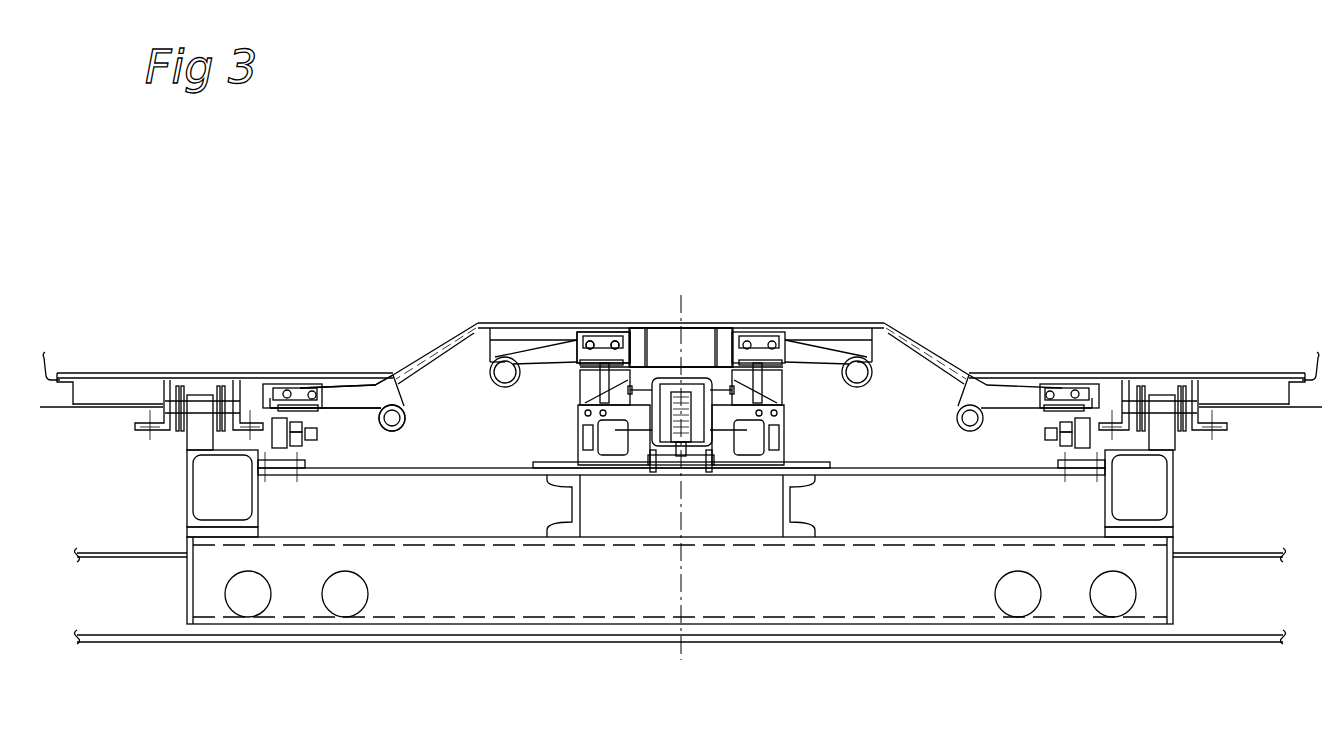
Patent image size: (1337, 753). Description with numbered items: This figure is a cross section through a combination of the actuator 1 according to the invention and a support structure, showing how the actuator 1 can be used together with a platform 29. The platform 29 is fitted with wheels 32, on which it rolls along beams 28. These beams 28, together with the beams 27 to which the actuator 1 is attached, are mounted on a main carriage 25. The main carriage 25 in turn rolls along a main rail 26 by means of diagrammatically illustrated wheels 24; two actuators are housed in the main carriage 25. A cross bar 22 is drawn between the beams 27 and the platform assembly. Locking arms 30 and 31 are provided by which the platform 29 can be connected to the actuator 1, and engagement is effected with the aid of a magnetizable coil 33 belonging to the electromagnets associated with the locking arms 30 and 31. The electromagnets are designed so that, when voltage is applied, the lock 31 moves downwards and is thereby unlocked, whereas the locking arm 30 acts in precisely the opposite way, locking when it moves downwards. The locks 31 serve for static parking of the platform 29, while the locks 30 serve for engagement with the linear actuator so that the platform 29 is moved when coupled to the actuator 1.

The actuator 1 is at (664, 485).
The cross bar 22 is at (800, 466).
The wheels 24 is at (1010, 600).
The main carriage 25 is at (792, 597).
The main rail 26 is at (900, 636).
The beams 27 is at (790, 505).
The beams 28 is at (1083, 515).
The platform 29 is at (723, 312).
The locking arm 30 is at (540, 346).
The locking arm 31 is at (338, 401).
The wheels 32 is at (203, 398).
The magnetizable coil 33 is at (1055, 432).